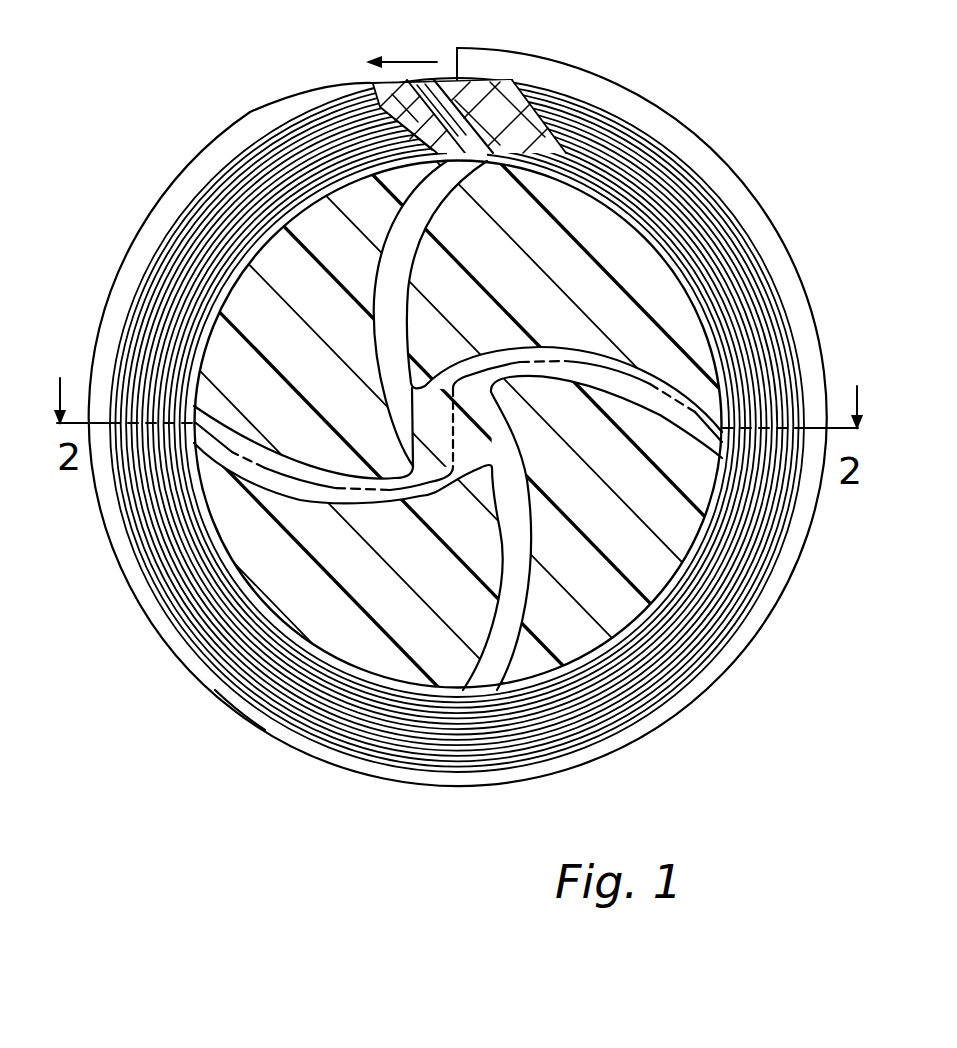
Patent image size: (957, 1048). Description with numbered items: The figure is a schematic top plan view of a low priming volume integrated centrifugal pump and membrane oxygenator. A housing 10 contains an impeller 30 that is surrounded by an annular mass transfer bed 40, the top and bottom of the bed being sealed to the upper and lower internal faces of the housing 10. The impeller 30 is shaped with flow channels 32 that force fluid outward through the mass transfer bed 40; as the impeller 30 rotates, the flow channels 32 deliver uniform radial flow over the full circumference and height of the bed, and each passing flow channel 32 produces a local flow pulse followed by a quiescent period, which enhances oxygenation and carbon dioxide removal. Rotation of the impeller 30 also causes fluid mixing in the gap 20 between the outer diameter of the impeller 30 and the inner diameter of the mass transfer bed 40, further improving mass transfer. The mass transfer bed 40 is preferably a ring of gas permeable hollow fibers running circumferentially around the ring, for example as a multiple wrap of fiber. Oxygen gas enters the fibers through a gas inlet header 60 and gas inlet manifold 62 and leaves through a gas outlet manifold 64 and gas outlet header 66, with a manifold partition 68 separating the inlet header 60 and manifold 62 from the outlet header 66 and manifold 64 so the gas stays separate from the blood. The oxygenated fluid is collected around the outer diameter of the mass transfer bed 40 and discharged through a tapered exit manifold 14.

The housing 10 is at (240, 705).
The tapered exit manifold 14 is at (667, 128).
The gap 20 is at (690, 550).
The impeller 30 is at (295, 558).
The flow channels 32 is at (458, 422).
The mass transfer bed 40 is at (742, 288).
The gas inlet header 60 is at (490, 90).
The gas inlet manifold 62 is at (578, 104).
The gas outlet manifold 64 is at (427, 82).
The gas outlet header 66 is at (300, 91).
The manifold partition 68 is at (437, 78).